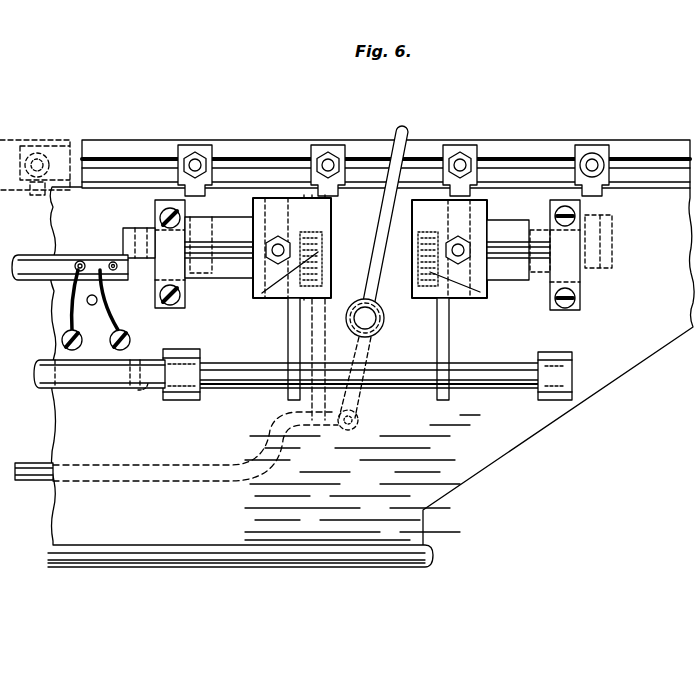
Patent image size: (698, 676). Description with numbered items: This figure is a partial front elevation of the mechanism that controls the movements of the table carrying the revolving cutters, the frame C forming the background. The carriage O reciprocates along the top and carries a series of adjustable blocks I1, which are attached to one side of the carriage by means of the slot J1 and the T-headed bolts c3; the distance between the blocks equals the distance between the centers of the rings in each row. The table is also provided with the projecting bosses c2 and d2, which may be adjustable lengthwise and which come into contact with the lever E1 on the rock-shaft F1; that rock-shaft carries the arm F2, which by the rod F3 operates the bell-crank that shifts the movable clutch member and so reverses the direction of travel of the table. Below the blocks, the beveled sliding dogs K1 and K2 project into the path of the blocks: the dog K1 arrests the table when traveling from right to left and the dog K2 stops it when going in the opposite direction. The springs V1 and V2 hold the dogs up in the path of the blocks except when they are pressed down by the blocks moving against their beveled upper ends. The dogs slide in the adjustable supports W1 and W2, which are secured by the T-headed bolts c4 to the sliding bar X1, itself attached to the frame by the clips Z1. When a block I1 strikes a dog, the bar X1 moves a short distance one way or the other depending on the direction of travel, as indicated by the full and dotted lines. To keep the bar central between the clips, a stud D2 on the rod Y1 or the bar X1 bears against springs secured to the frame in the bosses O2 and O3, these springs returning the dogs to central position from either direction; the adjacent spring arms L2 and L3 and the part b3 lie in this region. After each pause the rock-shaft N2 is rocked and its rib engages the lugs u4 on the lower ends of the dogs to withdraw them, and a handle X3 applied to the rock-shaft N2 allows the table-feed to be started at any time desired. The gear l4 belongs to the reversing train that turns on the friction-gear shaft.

The frame/body C is at (371, 377).
The slot J1 is at (633, 168).
The carriage O is at (241, 152).
The projecting boss d2 is at (37, 158).
The adjustable block I1 is at (460, 145).
The projecting boss c2 is at (593, 153).
The T-headed bolt c3 is at (320, 160).
The lever E1 is at (406, 128).
The clip Z1 is at (582, 282).
The adjustable support W1 is at (252, 278).
The sliding bar X1 is at (618, 256).
The rod Y1 is at (112, 256).
The beveled sliding dog K1 is at (318, 195).
The spring V1 is at (262, 294).
The T-headed bolt c4 is at (470, 246).
The beveled sliding dog K2 is at (448, 195).
The spring V2 is at (462, 296).
The adjustable support W2 is at (507, 290).
The rock-shaft F1 is at (375, 320).
The lug u4 is at (362, 361).
The rock-shaft N2 is at (386, 370).
The gear l4 is at (494, 388).
The handle X3 is at (137, 390).
The stud D2 is at (72, 255).
The spring arm L2 is at (75, 290).
The spring arm L3 is at (104, 302).
The link b3 is at (78, 278).
The boss O2 is at (62, 340).
The boss O3 is at (130, 340).
The arm F2 is at (366, 415).
The rod F3 is at (37, 462).